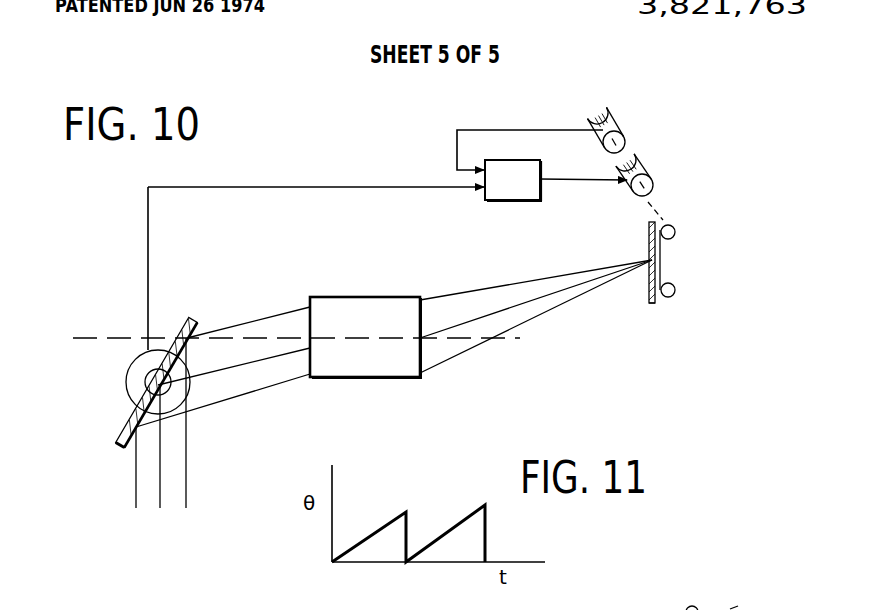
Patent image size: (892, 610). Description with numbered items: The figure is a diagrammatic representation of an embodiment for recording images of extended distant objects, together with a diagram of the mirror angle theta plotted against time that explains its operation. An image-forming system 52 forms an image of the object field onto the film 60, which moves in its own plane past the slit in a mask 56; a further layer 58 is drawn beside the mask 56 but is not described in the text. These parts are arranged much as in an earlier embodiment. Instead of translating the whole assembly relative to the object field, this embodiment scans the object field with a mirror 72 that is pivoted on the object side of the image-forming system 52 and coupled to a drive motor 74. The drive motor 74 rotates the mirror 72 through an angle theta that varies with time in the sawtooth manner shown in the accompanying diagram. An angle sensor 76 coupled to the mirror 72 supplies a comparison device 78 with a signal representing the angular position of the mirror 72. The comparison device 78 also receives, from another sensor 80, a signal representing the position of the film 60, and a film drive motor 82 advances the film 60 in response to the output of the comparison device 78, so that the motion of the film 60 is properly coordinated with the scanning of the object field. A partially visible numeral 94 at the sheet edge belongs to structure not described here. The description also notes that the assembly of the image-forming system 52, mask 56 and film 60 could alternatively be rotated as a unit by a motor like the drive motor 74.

In FIG. 10, the image-forming system 52 is at (394, 271).
In FIG. 10, the mask 56 is at (650, 296).
In FIG. 10, the emulsion layer 58 is at (650, 258).
In FIG. 10, the film 60 is at (661, 250).
In FIG. 10, the mirror 72 is at (191, 318).
In FIG. 10, the drive motor 74 is at (145, 372).
In FIG. 10, the angle sensor 76 is at (127, 382).
In FIG. 10, the comparison device 78 is at (526, 190).
In FIG. 10, the sensor 80 is at (622, 127).
In FIG. 10, the film drive motor 82 is at (647, 169).
In FIG. 11, the partial element 94 is at (727, 603).